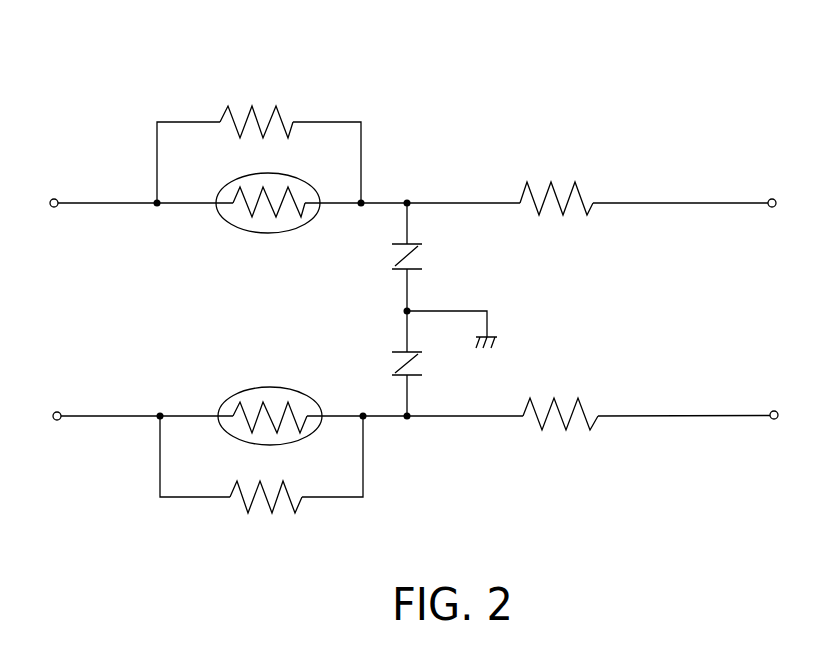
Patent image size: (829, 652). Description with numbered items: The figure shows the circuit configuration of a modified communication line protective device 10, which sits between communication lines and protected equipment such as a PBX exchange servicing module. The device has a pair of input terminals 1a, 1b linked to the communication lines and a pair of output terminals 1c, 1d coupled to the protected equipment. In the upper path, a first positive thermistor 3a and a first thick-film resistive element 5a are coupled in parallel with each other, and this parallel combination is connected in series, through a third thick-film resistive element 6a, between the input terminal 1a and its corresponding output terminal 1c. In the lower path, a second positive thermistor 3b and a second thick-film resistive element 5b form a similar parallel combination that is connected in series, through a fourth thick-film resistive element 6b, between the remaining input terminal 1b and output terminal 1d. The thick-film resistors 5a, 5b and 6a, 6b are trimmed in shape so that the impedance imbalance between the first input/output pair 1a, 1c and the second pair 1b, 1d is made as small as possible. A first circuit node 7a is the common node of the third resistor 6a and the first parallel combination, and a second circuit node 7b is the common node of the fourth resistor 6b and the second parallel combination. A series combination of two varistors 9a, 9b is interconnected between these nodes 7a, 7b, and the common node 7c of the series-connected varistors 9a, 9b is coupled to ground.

The protective device 10 is at (150, 48).
The input terminal 1a is at (52, 199).
The input terminal 1b is at (55, 421).
The output terminal 1c is at (773, 198).
The output terminal 1d is at (775, 420).
The first positive thermistor 3a is at (257, 234).
The second positive thermistor 3b is at (258, 388).
The first thick-film resistive element 5a is at (253, 113).
The second thick-film resistive element 5b is at (258, 504).
The third thick-film resistive element 6a is at (557, 181).
The fourth thick-film resistive element 6b is at (557, 428).
The first circuit node 7a is at (408, 197).
The second circuit node 7b is at (410, 420).
The common node 7c is at (403, 312).
The varistor 9a is at (413, 253).
The varistor 9b is at (413, 364).